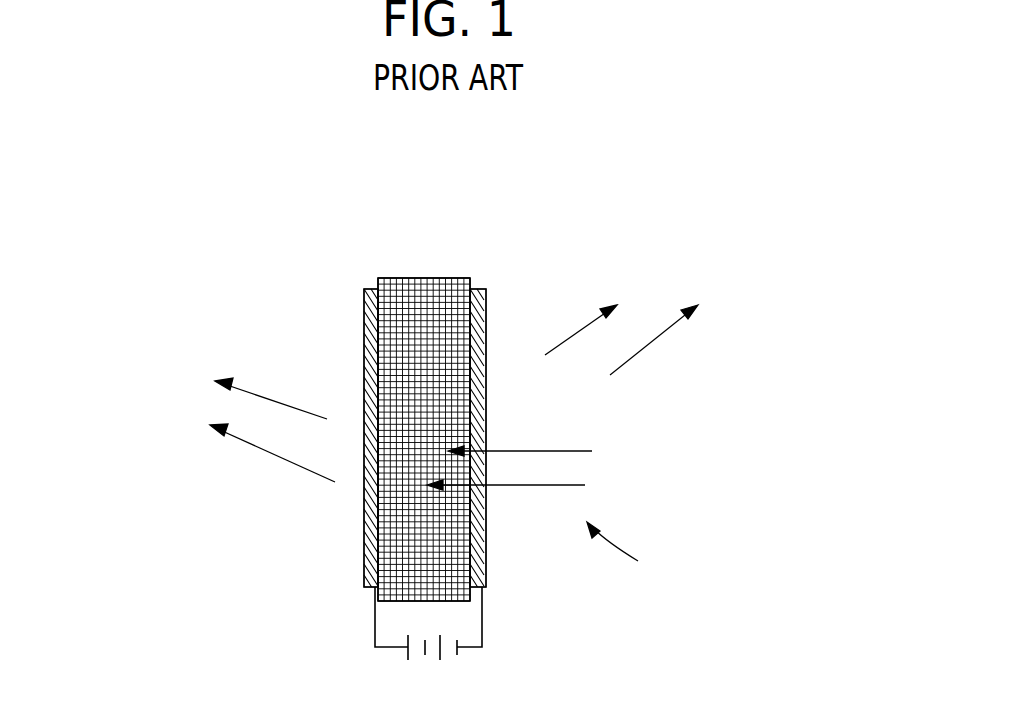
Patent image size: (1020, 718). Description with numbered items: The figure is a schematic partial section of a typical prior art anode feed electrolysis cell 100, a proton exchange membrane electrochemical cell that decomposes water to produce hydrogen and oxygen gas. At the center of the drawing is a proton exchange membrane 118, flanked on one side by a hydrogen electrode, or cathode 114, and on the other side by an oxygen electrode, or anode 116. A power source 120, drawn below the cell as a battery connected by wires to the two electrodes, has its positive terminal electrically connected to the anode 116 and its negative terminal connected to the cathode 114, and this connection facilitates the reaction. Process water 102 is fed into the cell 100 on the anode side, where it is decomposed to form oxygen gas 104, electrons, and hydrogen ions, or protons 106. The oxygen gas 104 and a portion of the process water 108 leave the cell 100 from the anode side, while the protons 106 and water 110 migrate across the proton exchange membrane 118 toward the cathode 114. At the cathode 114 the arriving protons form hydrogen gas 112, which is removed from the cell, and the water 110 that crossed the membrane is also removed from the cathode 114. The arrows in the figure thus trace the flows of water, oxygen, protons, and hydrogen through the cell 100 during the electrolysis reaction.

The anode feed electrolysis cell 100 is at (500, 252).
The process water 102 is at (639, 557).
The oxygen gas 104 is at (584, 322).
The hydrogen ions (protons) 106 is at (521, 451).
The portion of the process water 108 is at (668, 324).
The water 110 is at (240, 440).
The hydrogen gas 112 is at (250, 390).
The hydrogen electrode (cathode) 114 is at (364, 289).
The oxygen electrode (anode) 116 is at (486, 289).
The proton exchange membrane 118 is at (420, 278).
The power source 120 is at (516, 602).